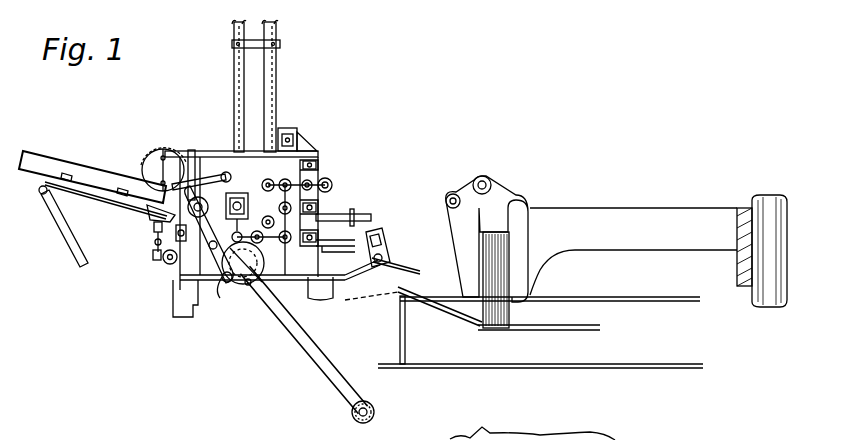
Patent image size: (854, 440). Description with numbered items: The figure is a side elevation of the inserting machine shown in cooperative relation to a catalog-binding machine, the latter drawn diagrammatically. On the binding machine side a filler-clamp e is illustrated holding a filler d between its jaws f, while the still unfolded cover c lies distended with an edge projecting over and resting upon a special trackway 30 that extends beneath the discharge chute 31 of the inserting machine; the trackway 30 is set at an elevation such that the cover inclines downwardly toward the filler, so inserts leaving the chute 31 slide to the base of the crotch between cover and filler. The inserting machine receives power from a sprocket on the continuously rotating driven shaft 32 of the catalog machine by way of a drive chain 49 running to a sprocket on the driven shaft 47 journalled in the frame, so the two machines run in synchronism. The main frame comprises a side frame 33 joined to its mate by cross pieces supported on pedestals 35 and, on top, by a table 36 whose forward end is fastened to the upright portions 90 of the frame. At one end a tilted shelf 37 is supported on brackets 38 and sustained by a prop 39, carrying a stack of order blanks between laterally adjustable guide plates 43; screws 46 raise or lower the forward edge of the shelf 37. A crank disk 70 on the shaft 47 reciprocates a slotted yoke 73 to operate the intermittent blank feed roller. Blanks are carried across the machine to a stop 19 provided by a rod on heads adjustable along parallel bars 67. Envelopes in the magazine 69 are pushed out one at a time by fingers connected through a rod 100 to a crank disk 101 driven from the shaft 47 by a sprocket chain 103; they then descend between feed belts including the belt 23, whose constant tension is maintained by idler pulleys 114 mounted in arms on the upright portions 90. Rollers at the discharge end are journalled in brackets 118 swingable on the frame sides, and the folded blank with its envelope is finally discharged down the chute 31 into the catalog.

The magazine 69 is at (277, 94).
The feed belt 23 is at (303, 147).
The upright portions of the frame 90 is at (318, 170).
The idler pulleys 114 is at (332, 186).
The parallel bars 67 is at (360, 216).
The stop 19 is at (338, 239).
The brackets 118 is at (383, 246).
The discharge chute 31 is at (398, 268).
The shelf 37 is at (23, 153).
The guide plates 43 is at (57, 160).
The prop 39 is at (72, 232).
The crank disk 101 is at (147, 168).
The sprocket chain 103 is at (141, 160).
The table 36 is at (212, 152).
The rod 100 is at (206, 165).
The driven shaft 47 is at (252, 260).
The slotted yoke 73 is at (214, 293).
The crank disk 70 is at (248, 285).
The brackets 38 is at (150, 221).
The screws 46 is at (155, 245).
The pedestals 35 is at (190, 320).
The side frame 33 is at (300, 282).
The drive chain 49 is at (318, 343).
The driven shaft 32 is at (376, 412).
The trackway 30 is at (397, 300).
The jaws f is at (525, 205).
The filler d is at (505, 258).
The cover c is at (588, 327).
The filler-clamp e is at (650, 210).